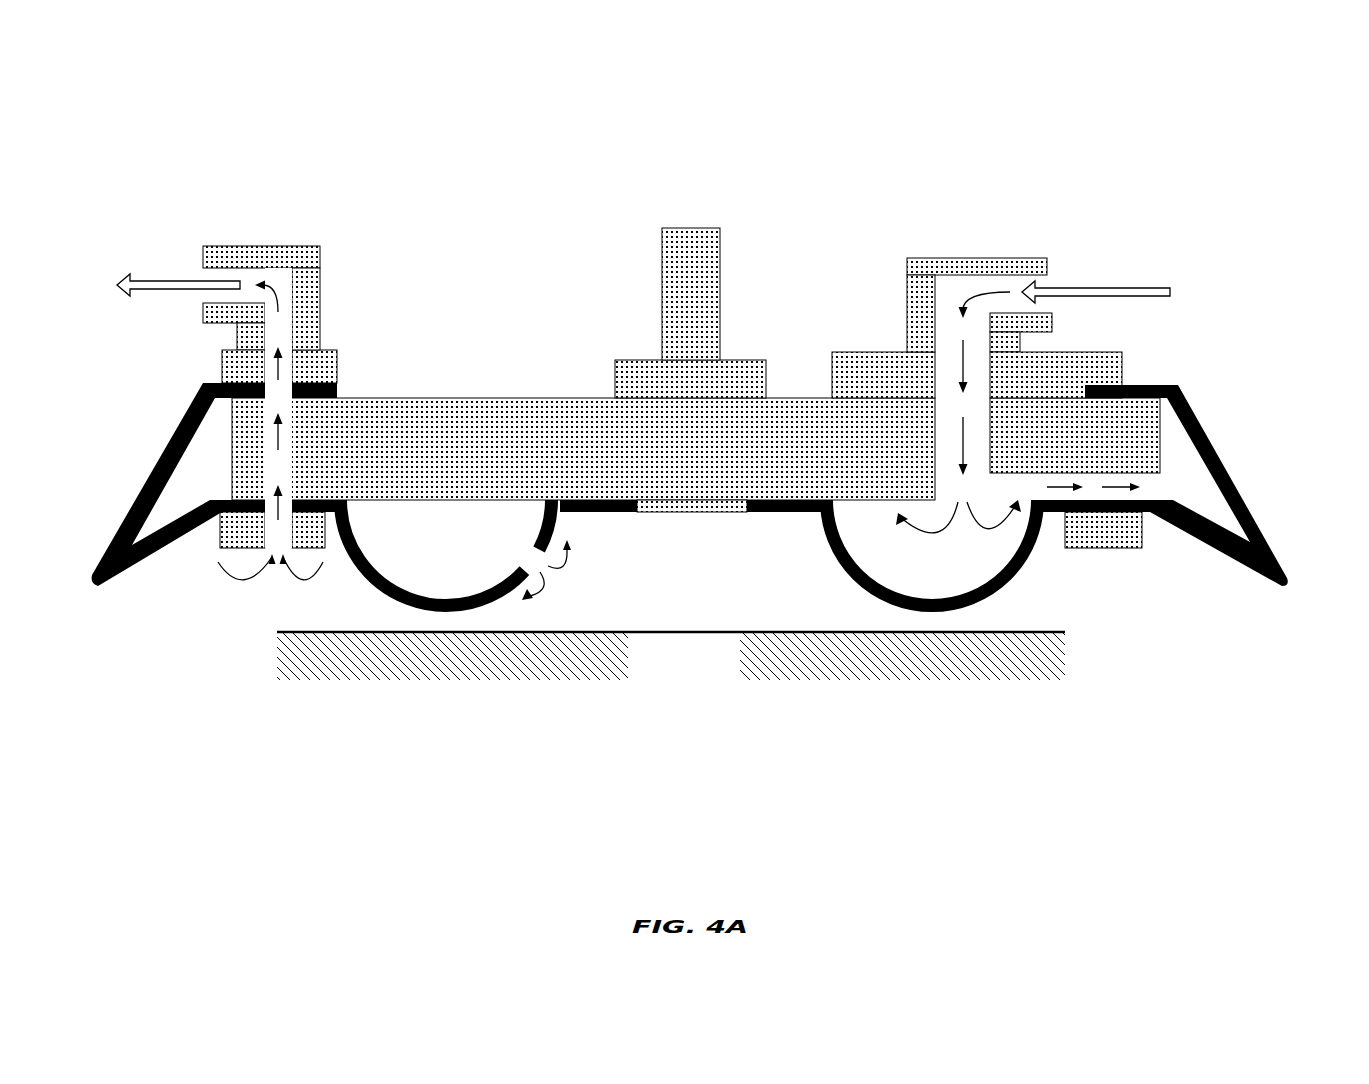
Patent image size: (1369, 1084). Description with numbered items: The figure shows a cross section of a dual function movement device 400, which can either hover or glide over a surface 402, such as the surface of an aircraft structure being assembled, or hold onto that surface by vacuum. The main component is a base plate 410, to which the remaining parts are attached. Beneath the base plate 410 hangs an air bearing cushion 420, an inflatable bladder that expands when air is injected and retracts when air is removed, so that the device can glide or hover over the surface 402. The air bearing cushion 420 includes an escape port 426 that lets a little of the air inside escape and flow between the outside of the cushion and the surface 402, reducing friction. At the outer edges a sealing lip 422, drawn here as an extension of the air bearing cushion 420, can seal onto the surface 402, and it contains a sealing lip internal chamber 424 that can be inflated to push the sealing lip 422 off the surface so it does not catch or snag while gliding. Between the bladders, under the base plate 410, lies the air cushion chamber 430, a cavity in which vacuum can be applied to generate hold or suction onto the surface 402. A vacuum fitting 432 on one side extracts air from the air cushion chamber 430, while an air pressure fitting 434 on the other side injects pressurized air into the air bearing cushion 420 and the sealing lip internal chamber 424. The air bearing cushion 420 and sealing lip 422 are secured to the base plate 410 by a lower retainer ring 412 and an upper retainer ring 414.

The dual function movement device 400 is at (590, 168).
The surface 402 is at (671, 663).
The base plate 410 is at (765, 430).
The lower retainer ring 412 is at (245, 532).
The upper retainer ring 414 is at (241, 365).
The air bearing cushion 420 is at (943, 558).
The sealing lip 422 is at (1235, 453).
The sealing lip internal chamber 424 is at (1202, 495).
The escape port 426 is at (533, 562).
The air cushion chamber 430 is at (615, 587).
The vacuum fitting 432 is at (231, 333).
The air pressure fitting 434 is at (1040, 331).